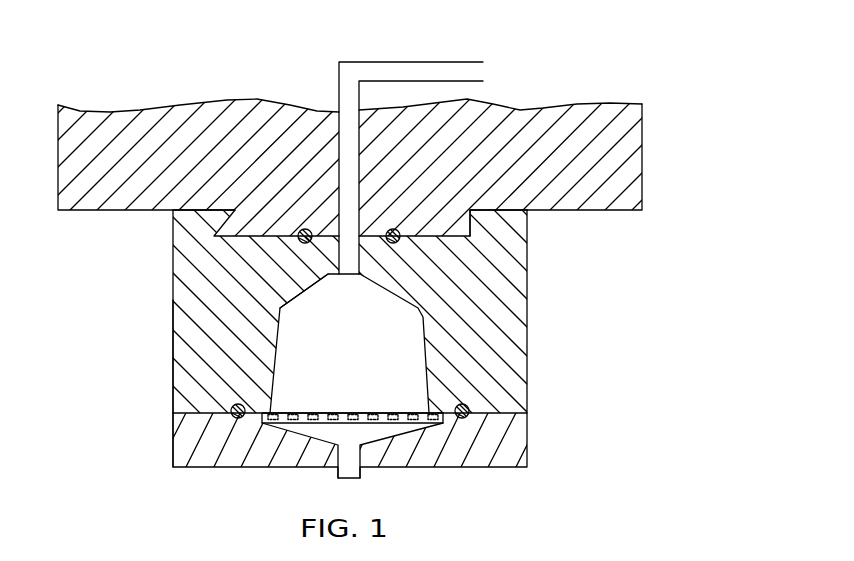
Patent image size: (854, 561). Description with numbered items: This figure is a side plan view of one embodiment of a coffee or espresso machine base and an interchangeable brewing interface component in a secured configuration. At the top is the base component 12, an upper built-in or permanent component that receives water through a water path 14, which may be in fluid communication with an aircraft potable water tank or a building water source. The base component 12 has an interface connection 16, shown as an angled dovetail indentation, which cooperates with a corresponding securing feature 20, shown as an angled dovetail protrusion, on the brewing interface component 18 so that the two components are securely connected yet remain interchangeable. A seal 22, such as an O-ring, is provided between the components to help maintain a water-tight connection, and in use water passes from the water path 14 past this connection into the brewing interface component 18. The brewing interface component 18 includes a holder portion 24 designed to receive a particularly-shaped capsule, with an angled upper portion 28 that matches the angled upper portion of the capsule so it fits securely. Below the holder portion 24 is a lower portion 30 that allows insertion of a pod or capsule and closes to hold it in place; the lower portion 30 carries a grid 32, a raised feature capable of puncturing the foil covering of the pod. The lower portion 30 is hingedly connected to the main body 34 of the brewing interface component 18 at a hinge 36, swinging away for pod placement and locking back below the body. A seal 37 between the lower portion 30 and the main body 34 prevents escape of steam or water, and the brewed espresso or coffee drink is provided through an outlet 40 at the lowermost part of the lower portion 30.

The base component 12 is at (570, 140).
The water path 14 is at (403, 62).
The interface connection 16 is at (190, 220).
The brewing interface component 18 is at (527, 293).
The securing feature 20 is at (505, 219).
The seal 22 is at (396, 230).
The holder portion 24 is at (333, 354).
The angled upper portion 28 is at (290, 293).
The lower portion 30 is at (165, 445).
The grid 32 is at (445, 424).
The main body 34 is at (190, 363).
The hinge 36 is at (173, 433).
The seal 37 is at (233, 406).
The outlet funnel 40 is at (353, 433).